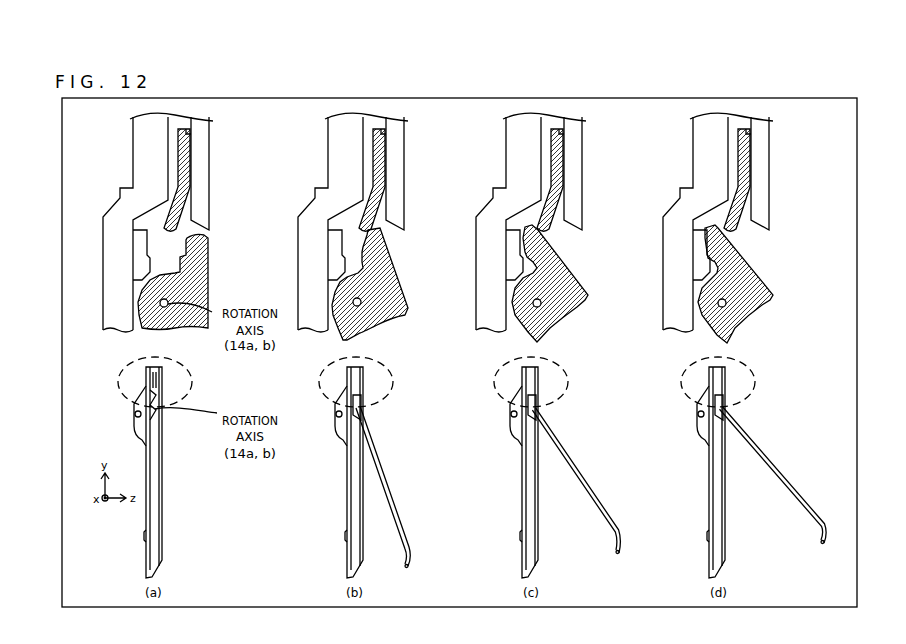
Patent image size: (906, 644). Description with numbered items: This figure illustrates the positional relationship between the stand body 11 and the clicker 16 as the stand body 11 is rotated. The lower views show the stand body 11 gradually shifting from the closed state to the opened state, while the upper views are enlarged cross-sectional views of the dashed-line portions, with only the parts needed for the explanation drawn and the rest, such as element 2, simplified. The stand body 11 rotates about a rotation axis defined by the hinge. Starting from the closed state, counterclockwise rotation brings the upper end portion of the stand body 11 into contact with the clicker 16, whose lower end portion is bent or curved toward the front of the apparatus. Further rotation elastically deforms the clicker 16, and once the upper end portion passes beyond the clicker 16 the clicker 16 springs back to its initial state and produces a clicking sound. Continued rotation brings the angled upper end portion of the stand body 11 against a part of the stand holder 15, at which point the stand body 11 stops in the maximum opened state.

The housing / guide rail 2 is at (202, 156).
The stand body 11 is at (207, 280).
The stand holder 15 is at (168, 152).
The clicker 16 is at (183, 213).